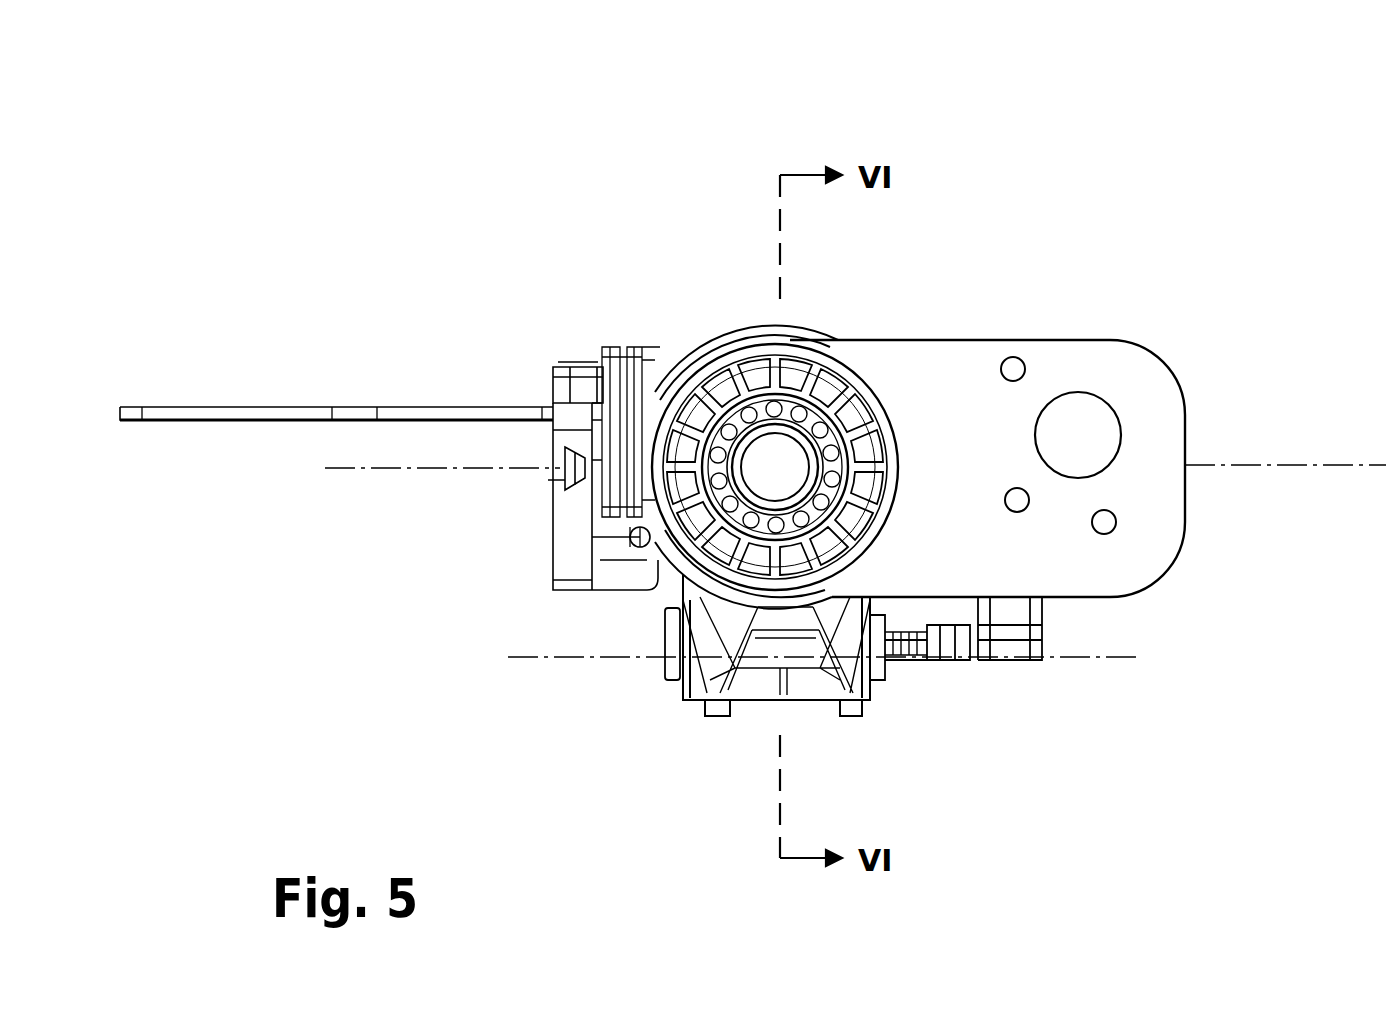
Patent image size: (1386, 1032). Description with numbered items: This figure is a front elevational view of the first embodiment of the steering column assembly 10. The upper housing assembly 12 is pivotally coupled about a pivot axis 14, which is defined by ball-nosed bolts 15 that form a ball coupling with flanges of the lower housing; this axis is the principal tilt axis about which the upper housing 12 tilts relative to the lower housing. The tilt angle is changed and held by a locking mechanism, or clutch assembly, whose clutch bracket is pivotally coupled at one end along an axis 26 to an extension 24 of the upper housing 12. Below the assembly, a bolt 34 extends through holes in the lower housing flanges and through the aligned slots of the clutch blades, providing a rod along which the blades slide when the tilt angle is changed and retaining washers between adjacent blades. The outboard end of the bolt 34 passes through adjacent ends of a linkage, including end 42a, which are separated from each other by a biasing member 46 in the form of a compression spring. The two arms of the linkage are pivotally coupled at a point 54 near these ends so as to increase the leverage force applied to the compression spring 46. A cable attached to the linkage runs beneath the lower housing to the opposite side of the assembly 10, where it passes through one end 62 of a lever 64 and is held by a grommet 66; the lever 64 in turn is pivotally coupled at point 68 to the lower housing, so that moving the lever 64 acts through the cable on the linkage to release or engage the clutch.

The steering column assembly 10 is at (1128, 182).
The upper housing assembly 12 is at (738, 316).
The pivot axis 14 is at (350, 470).
The ball-nosed bolt 15 is at (538, 480).
The extension 24 is at (680, 680).
The axis 26 is at (530, 660).
The bolt 34 is at (1058, 615).
The end of linkage 42a is at (1002, 640).
The biasing member 46 is at (965, 648).
The pivot point 54 is at (932, 645).
The end of lever 62 is at (612, 592).
The lever 64 is at (453, 405).
The grommet 66 is at (630, 533).
The pivot point 68 is at (572, 362).